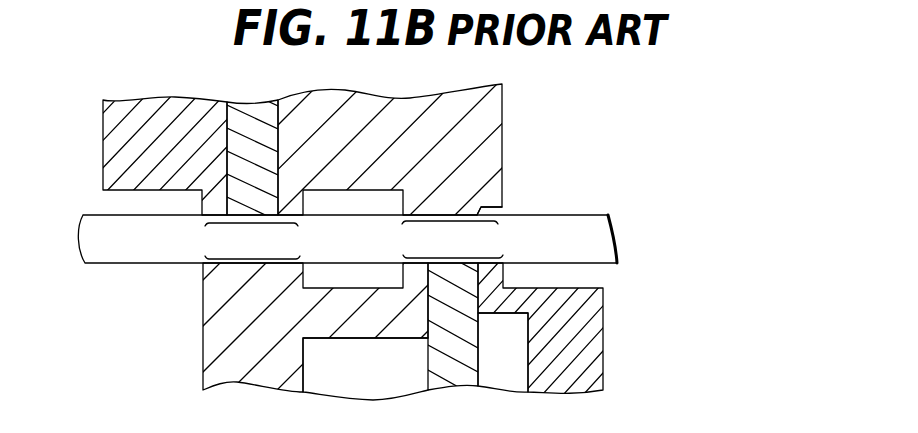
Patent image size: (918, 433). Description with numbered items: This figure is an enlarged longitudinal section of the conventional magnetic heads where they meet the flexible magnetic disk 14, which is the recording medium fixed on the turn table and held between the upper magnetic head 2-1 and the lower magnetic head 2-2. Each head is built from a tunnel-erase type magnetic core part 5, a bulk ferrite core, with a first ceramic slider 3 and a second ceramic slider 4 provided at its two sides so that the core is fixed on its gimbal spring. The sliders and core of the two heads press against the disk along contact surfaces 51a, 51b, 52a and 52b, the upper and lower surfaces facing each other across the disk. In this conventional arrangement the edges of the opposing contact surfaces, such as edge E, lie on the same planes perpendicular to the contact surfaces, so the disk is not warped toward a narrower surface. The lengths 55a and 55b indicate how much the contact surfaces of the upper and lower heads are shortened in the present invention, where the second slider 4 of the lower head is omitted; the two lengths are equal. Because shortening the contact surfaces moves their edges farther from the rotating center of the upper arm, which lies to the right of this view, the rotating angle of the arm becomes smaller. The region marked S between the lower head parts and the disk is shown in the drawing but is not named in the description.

The first ceramic slider 3 is at (502, 115).
The second ceramic slider 4 is at (103, 170).
The magnetic core part 5 is at (258, 103).
The flexible magnetic disk 14 is at (617, 238).
The contact surface 51a is at (240, 224).
The contact surface 51b is at (254, 259).
The contact surface 52a is at (456, 222).
The contact surface 52b is at (452, 258).
The length 55a is at (485, 199).
The length 55b is at (488, 277).
The edge E is at (502, 213).
The space S is at (492, 268).
The upper magnetic head 2-1 is at (517, 172).
The lower magnetic head 2-2 is at (606, 344).